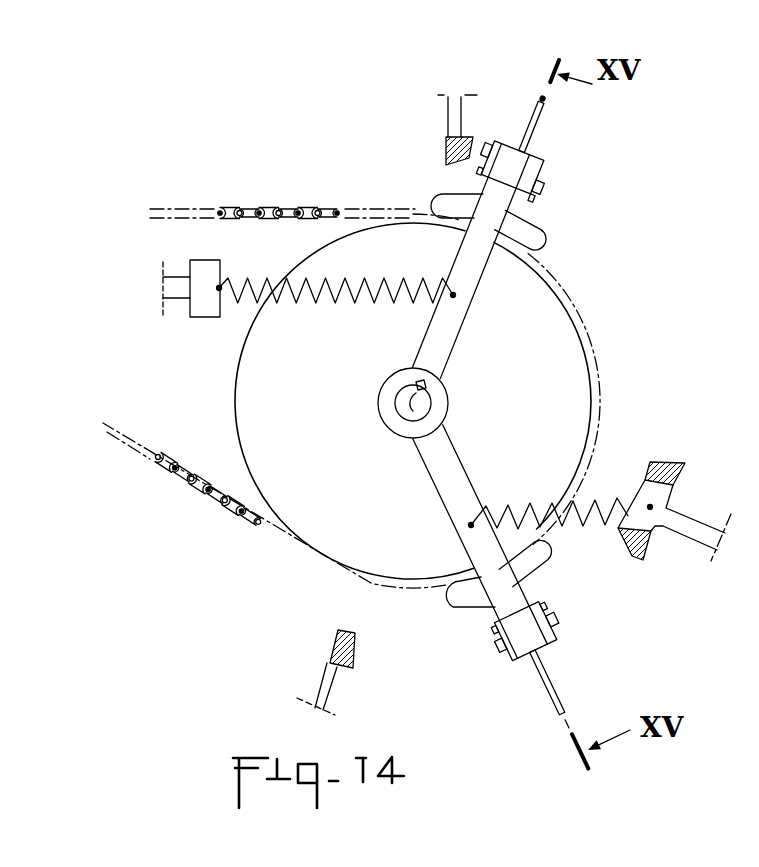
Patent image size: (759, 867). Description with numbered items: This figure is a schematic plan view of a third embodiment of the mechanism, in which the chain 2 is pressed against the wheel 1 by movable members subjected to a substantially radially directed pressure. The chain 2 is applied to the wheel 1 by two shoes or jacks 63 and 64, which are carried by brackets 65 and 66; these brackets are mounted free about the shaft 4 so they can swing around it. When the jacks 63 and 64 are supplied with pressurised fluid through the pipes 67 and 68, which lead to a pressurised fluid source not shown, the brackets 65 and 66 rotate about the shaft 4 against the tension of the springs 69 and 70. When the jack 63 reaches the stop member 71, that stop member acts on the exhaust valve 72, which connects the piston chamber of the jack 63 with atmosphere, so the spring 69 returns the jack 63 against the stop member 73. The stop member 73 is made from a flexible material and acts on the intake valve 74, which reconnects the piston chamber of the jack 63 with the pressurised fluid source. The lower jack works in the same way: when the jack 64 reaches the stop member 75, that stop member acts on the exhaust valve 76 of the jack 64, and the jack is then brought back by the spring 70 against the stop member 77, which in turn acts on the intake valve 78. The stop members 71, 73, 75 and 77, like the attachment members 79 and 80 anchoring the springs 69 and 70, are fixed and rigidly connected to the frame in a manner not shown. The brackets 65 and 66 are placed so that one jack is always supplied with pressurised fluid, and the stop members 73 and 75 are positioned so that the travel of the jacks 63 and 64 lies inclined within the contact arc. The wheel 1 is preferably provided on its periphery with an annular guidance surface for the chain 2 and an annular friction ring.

The wheel 1 is at (226, 411).
The chain 2 is at (278, 200).
The shaft 4 is at (408, 403).
The jack 63 is at (522, 233).
The jack 64 is at (466, 598).
The bracket 65 is at (445, 335).
The bracket 66 is at (442, 452).
The pipe 67 is at (538, 122).
The pipe 68 is at (553, 690).
The spring 69 is at (340, 296).
The spring 70 is at (598, 493).
The stop member 71 is at (665, 461).
The exhaust valve 72 is at (545, 178).
The stop member 73 is at (447, 144).
The intake valve 74 is at (481, 150).
The stop member 75 is at (340, 645).
The exhaust valve 76 is at (499, 648).
The stop member 77 is at (648, 561).
The intake valve 78 is at (557, 618).
The attachment member 79 is at (208, 303).
The attachment member 80 is at (668, 506).